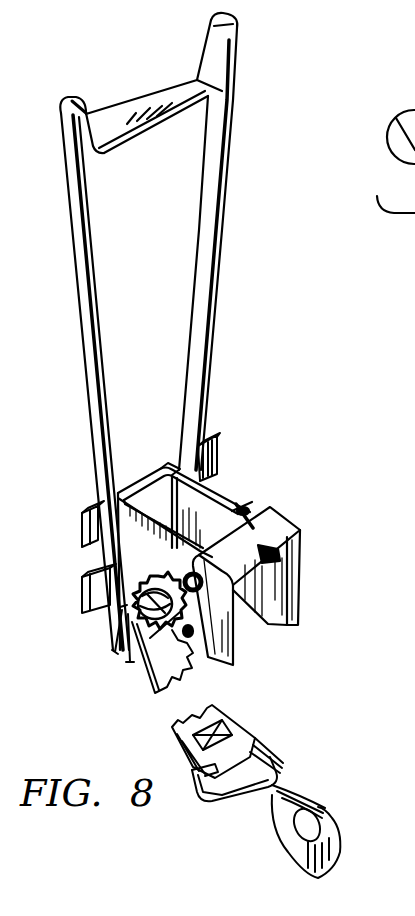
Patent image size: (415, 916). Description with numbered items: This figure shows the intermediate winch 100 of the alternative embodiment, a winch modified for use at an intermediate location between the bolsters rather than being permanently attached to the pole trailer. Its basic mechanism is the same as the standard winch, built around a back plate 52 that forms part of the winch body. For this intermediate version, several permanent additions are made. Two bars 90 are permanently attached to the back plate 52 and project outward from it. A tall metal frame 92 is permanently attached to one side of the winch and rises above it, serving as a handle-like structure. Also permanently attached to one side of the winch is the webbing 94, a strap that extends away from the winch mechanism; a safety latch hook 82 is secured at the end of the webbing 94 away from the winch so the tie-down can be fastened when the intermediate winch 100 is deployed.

The back plate 52 is at (172, 468).
The safety latch hook 82 is at (335, 822).
The bars 90 is at (81, 523).
The metal frame 92 is at (212, 262).
The webbing 94 is at (145, 677).
The intermediate winch 100 is at (275, 459).